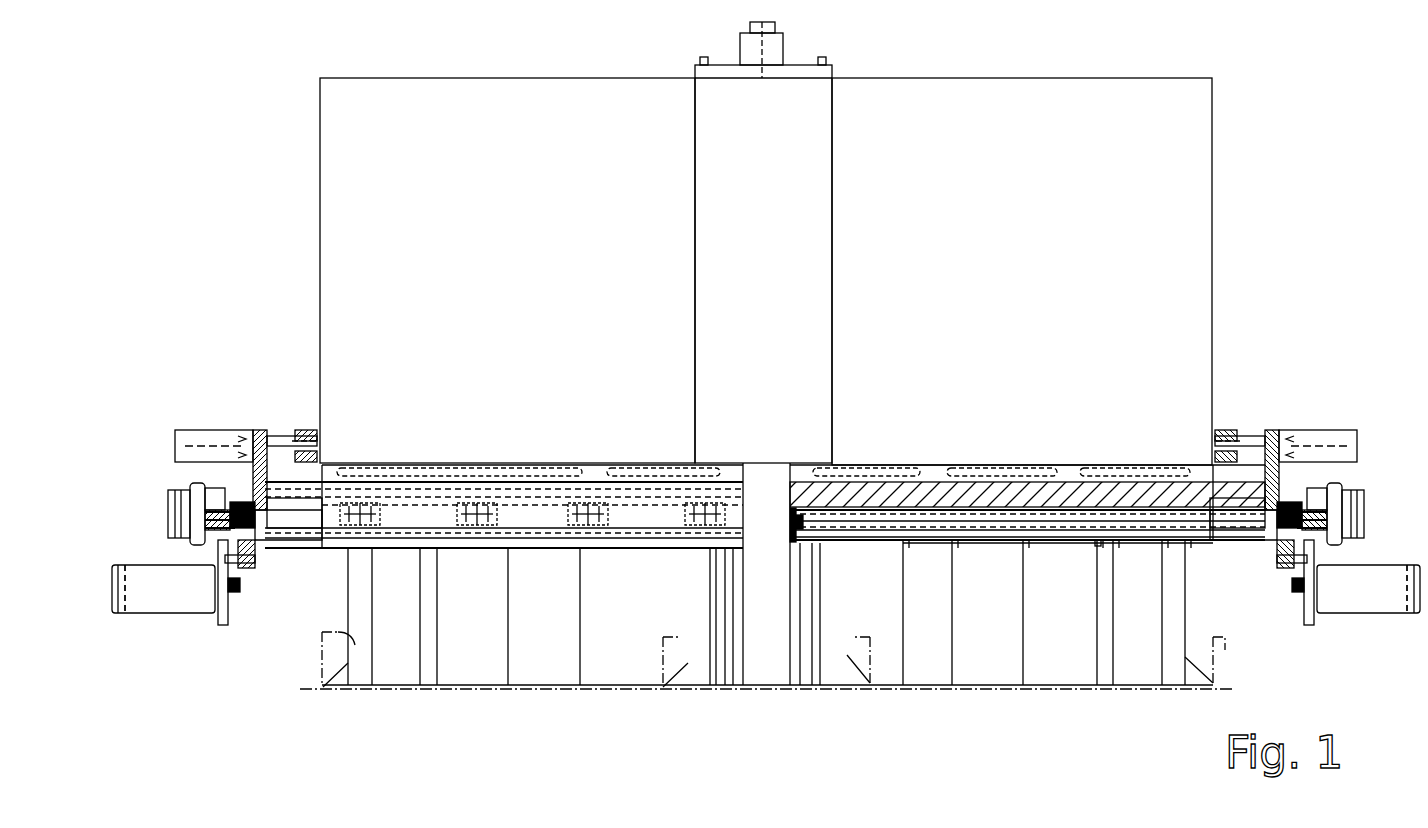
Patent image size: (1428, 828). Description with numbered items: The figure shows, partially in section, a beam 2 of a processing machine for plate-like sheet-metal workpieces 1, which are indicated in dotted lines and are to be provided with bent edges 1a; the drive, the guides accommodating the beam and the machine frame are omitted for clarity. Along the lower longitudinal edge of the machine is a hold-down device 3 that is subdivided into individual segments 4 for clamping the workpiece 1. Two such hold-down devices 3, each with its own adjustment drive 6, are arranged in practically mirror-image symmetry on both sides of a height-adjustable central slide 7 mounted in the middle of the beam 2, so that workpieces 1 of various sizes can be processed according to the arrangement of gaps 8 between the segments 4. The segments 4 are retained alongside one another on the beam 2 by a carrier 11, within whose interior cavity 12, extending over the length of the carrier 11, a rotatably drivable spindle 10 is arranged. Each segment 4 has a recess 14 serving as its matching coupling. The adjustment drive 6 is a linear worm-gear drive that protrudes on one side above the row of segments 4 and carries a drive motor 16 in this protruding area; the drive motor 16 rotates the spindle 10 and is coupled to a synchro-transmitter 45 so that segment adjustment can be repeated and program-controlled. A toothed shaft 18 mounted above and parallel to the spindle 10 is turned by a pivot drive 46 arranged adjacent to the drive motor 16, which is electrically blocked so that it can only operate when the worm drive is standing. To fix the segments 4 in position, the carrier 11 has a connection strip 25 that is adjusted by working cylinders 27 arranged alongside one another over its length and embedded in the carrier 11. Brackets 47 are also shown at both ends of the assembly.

The workpiece 1 is at (666, 635).
The bent edge 1a is at (322, 632).
The beam 2 is at (320, 148).
The hold-down device 3 is at (322, 590).
The segment 4 is at (462, 668).
The adjustment drive 6 is at (195, 630).
The central slide 7 is at (765, 688).
The gap 8 is at (652, 688).
The spindle 10 is at (1058, 540).
The carrier 11 is at (922, 490).
The interior cavity 12 is at (1000, 520).
The recess 14 is at (1100, 545).
The drive motor 16 is at (148, 580).
The toothed shaft 18 is at (1088, 512).
The connection strip 25 is at (625, 510).
The working cylinder 27 is at (480, 500).
The synchro-transmitter 45 is at (115, 565).
The pivot drive 46 is at (170, 497).
The bracket 47 is at (202, 437).